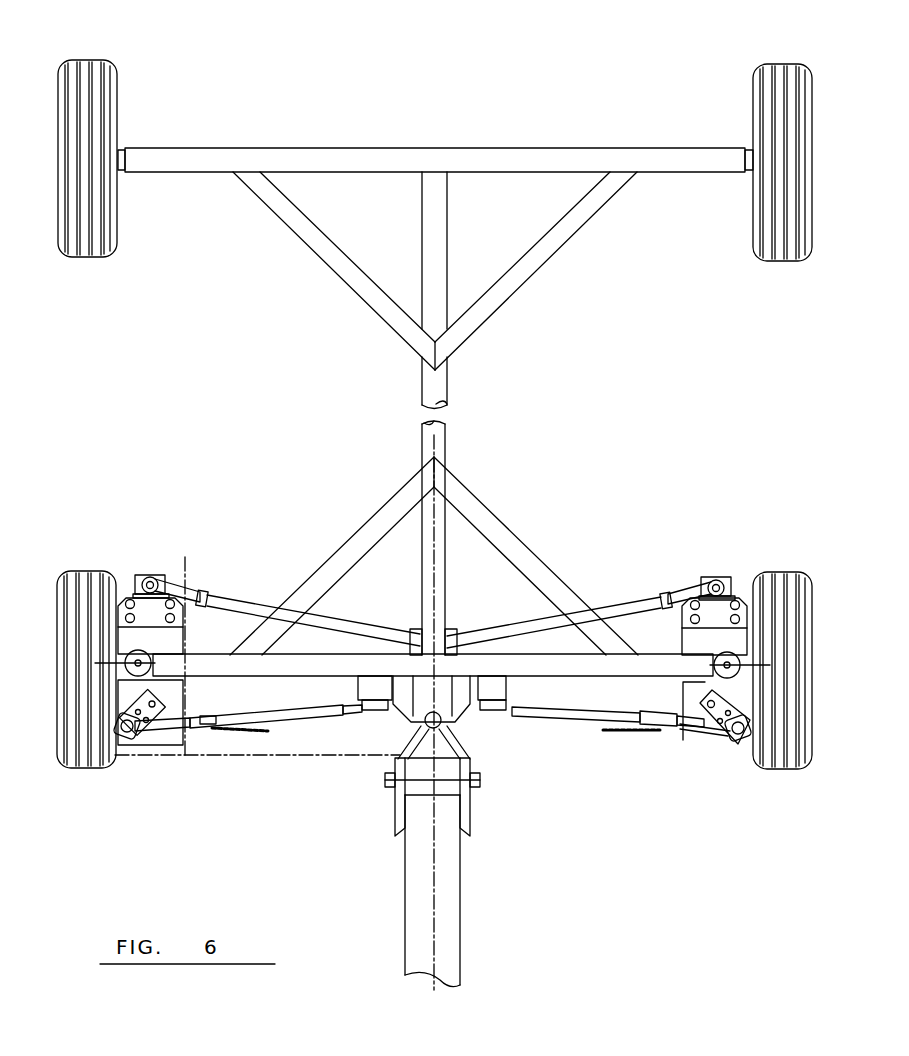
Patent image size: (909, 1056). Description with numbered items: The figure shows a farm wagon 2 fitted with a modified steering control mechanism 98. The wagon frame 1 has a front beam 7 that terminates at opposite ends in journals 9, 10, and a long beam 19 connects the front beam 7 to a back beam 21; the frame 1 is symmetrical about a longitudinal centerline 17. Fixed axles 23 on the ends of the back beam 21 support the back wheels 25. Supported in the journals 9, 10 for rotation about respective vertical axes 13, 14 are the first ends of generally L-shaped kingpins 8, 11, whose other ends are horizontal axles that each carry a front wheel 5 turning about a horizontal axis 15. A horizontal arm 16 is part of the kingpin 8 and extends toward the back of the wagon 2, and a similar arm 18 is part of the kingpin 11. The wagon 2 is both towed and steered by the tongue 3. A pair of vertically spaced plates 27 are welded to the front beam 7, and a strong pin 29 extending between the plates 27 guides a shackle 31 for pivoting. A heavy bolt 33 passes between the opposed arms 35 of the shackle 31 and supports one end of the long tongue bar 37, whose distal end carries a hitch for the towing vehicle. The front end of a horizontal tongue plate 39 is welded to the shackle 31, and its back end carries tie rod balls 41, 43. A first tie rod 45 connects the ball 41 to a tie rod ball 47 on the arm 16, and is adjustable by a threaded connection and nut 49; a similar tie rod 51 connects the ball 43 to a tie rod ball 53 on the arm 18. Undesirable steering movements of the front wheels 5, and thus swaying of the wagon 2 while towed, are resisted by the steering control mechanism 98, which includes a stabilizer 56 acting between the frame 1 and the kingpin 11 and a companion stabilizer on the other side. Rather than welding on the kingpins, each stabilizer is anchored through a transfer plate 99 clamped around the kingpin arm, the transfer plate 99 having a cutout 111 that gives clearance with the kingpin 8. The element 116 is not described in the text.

The frame 1 is at (522, 532).
The farm wagon 2 is at (617, 772).
The tongue 3 is at (463, 953).
The front wheels 5 is at (80, 690).
The front beam 7 is at (600, 662).
The kingpin 8 is at (117, 740).
The journal 9 is at (168, 557).
The journal 10 is at (732, 735).
The kingpin 11 is at (750, 620).
The vertical axis 13 is at (173, 653).
The vertical axis 14 is at (712, 655).
The horizontal axis 15 is at (96, 600).
The horizontal arm 16 is at (138, 580).
The longitudinal centerline 17 is at (436, 610).
The arm 18 is at (704, 582).
The long beam 19 is at (436, 256).
The back beam 21 is at (520, 166).
The fixed axles 23 is at (121, 153).
The back wheels 25 is at (107, 68).
The plates 27 is at (465, 712).
The pin 29 is at (505, 708).
The shackle 31 is at (468, 754).
The bolt 33 is at (445, 790).
The arms 35 is at (398, 792).
The tongue bar 37 is at (440, 922).
The tongue plate 39 is at (368, 712).
The tie rod ball 41 is at (414, 650).
The tie rod ball 43 is at (452, 640).
The first tie rod 45 is at (240, 598).
The tie rod ball 47 is at (152, 582).
The nut 49 is at (202, 592).
The tie rod 51 is at (625, 612).
The tie rod ball 53 is at (714, 586).
The stabilizer 56 is at (560, 716).
The steering control mechanism 98 is at (272, 704).
The transfer plate 99 is at (150, 742).
The cutout 111 is at (120, 665).
The pivot plate 116 is at (700, 696).